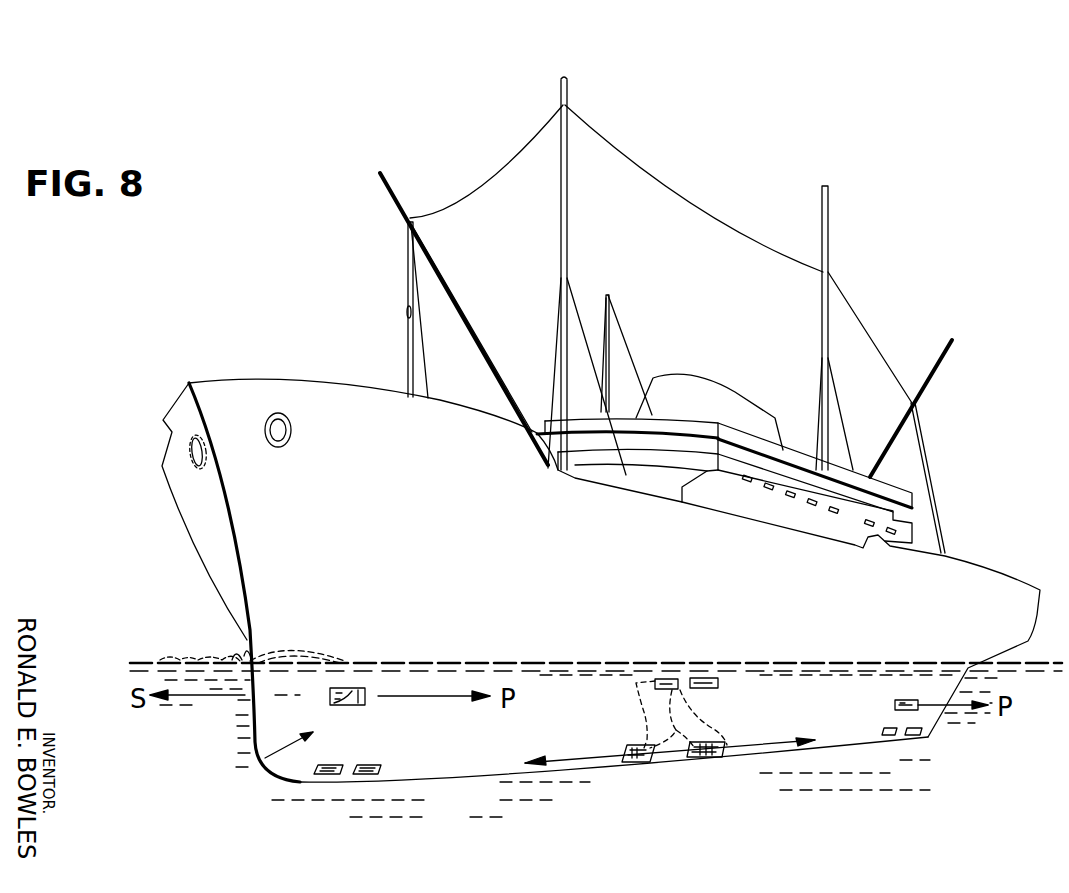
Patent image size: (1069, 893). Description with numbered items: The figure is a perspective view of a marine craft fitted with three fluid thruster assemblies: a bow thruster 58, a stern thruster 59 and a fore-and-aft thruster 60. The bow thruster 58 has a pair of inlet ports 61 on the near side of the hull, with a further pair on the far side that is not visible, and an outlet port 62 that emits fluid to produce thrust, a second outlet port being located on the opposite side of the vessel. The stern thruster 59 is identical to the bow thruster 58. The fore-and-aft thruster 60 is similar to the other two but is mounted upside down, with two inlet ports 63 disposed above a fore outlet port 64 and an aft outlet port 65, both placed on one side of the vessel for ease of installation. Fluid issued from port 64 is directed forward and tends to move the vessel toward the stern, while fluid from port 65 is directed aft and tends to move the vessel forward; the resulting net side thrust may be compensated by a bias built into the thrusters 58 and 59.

The bow thruster 58 is at (265, 755).
The stern thruster 59 is at (920, 721).
The fore-and-aft thruster 60 is at (668, 766).
The inlet ports 61 is at (365, 776).
The outlet port 62 is at (362, 689).
The inlet ports 63 is at (712, 680).
The fore outlet port 64 is at (640, 762).
The aft outlet port 65 is at (718, 752).